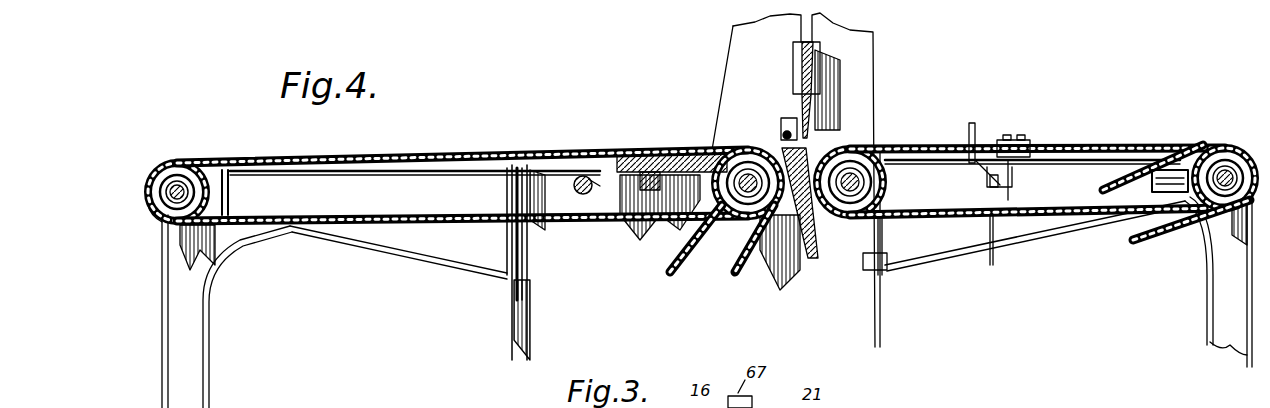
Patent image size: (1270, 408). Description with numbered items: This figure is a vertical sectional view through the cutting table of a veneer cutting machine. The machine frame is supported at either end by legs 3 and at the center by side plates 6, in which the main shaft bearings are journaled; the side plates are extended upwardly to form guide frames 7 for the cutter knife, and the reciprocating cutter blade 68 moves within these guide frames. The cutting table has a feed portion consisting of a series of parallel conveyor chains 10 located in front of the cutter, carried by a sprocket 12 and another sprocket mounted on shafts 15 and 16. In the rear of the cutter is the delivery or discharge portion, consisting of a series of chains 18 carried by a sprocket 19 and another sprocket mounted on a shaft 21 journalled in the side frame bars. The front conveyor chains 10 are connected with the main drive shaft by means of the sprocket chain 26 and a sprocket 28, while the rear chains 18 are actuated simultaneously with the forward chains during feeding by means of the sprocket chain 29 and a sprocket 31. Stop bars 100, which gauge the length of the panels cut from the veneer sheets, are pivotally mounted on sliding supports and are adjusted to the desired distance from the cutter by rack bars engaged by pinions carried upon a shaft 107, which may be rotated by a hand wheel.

The legs 3 is at (200, 387).
The side plates 6 is at (517, 317).
The guide frames 7 is at (723, 97).
The conveyor chains 10 is at (385, 160).
The sprocket 12 is at (180, 168).
The shaft 15 is at (165, 216).
The shaft 16 is at (748, 165).
The chains 18 is at (1076, 148).
The sprocket 19 is at (850, 212).
The shaft 21 is at (882, 183).
The sprocket chain 26 is at (672, 272).
The sprocket 28 is at (742, 207).
The sprocket chain 29 is at (1162, 235).
The sprocket 31 is at (1228, 150).
The cutter blade 68 is at (802, 90).
The stop bars 100 is at (978, 125).
The shaft 107 is at (585, 197).